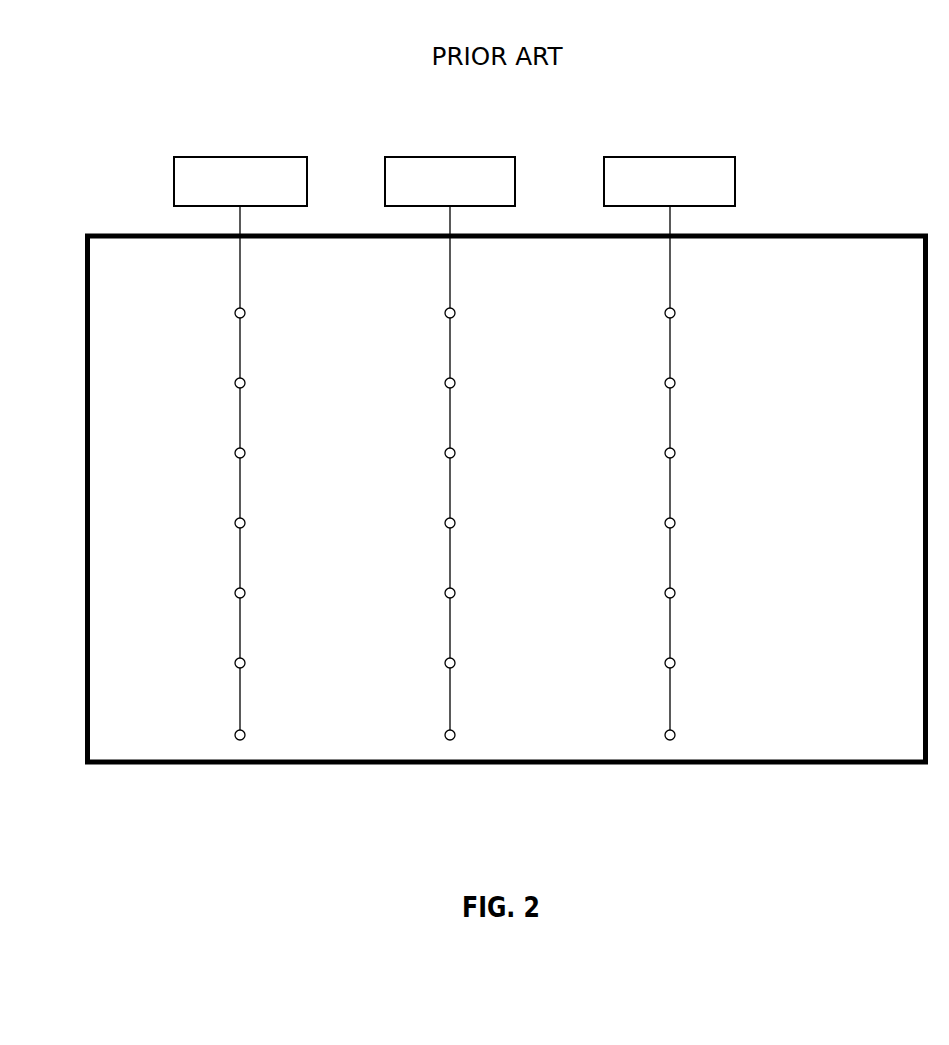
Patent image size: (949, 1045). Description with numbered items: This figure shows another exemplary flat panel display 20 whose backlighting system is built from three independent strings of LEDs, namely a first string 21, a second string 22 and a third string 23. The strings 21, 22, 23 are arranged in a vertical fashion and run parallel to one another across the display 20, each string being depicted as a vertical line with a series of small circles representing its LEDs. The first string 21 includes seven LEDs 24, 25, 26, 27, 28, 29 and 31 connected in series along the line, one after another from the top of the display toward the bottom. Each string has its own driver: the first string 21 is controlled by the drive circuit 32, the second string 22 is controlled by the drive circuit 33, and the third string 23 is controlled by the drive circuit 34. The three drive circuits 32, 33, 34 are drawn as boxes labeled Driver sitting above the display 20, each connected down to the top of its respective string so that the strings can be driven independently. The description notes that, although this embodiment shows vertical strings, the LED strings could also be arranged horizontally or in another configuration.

The flat panel display 20 is at (888, 283).
The first string 21 is at (238, 348).
The second string 22 is at (451, 353).
The third string 23 is at (671, 353).
The LED 24 is at (248, 304).
The LED 25 is at (248, 374).
The LED 26 is at (248, 444).
The LED 27 is at (248, 514).
The LED 28 is at (248, 584).
The LED 29 is at (248, 654).
The LED 31 is at (248, 726).
The drive circuit 32 is at (214, 157).
The drive circuit 33 is at (428, 157).
The drive circuit 34 is at (648, 157).